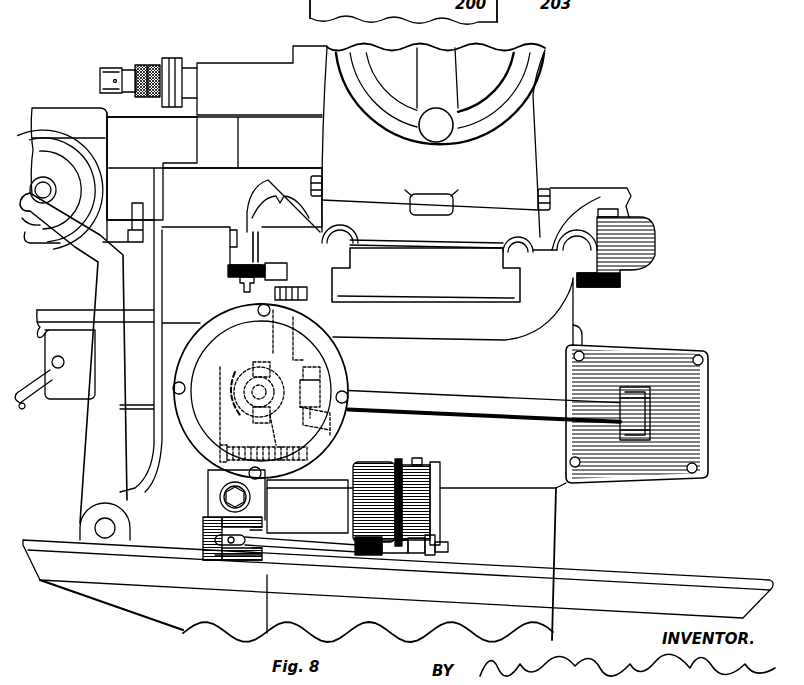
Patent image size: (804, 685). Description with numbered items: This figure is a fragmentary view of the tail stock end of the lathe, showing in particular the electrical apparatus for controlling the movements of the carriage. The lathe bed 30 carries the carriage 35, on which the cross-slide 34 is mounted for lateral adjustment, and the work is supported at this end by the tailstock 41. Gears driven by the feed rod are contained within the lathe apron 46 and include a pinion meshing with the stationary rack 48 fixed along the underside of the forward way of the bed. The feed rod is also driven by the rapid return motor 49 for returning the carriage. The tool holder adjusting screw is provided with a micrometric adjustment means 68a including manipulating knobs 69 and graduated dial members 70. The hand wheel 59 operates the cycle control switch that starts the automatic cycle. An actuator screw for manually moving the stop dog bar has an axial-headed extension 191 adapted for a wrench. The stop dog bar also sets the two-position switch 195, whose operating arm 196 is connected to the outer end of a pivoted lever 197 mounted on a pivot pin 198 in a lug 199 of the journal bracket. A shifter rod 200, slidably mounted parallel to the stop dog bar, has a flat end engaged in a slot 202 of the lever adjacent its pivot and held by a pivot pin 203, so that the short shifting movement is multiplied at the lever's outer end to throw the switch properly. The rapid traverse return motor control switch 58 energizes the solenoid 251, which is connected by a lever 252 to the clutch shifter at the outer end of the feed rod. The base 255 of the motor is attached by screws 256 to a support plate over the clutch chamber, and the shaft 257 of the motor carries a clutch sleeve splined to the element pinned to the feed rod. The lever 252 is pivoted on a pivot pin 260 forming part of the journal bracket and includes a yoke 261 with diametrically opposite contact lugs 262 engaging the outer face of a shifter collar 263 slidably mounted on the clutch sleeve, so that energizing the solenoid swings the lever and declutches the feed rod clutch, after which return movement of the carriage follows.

The lathe bed 30 is at (335, 252).
The cross-slide 34 is at (241, 146).
The carriage 35 is at (175, 168).
The tailstock 41 is at (523, 124).
The lathe apron 46 is at (242, 237).
The stationary rack 48 is at (280, 268).
The rapid return motor 49 is at (318, 357).
The rapid traverse return motor control switch 58 is at (197, 525).
The hand wheel 59 is at (60, 107).
The micrometric adjustment means 68a is at (130, 62).
The manipulating knobs 69 is at (153, 64).
The graduated dial members 70 is at (174, 62).
The axial-headed extension 191 is at (222, 497).
The two-position switch 195 is at (378, 462).
The operating arm 196 is at (378, 558).
The pivoted lever 197 is at (332, 557).
The pivot pin 198 is at (212, 562).
The lug 199 is at (242, 565).
The shifter rod 200 is at (280, 552).
The slot 202 is at (267, 533).
The pivot pin 203 is at (267, 520).
The solenoid 251 is at (650, 352).
The lever 252 is at (492, 402).
The base of the motor 255 is at (325, 336).
The screws 256 is at (262, 318).
The shaft of the motor 257 is at (270, 418).
The pivot pin 260 is at (346, 372).
The yoke 261 is at (335, 433).
The contact lugs 262 is at (255, 376).
The shifter collar 263 is at (244, 392).